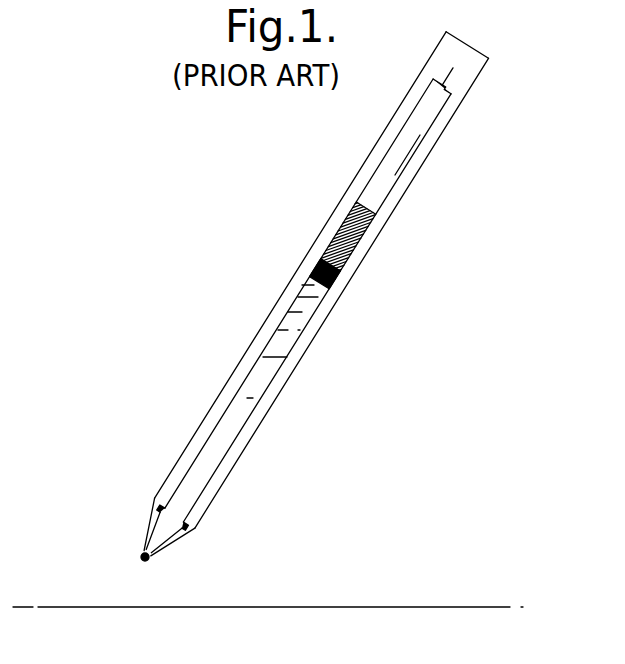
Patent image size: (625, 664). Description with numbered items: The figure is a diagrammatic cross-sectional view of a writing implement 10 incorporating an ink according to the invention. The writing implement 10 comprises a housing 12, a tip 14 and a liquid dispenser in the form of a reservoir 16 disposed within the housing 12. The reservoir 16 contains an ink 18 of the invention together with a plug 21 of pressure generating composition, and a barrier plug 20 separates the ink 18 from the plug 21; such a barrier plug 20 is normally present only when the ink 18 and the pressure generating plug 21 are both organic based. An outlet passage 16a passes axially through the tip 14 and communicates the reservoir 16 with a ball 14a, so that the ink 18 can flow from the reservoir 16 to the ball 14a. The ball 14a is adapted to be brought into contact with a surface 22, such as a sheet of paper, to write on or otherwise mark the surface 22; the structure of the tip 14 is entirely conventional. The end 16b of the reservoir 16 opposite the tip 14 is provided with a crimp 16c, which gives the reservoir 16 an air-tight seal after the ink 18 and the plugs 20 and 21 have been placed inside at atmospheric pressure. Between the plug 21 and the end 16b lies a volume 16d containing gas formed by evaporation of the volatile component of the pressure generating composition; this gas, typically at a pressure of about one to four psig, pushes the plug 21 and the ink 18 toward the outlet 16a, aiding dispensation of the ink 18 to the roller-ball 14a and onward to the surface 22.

The writing implement 10 is at (262, 263).
The housing 12 is at (382, 231).
The tip 14 is at (163, 550).
The ball 14a is at (140, 557).
The reservoir 16 is at (278, 383).
The outlet passage 16a is at (172, 535).
The end of the reservoir 16b is at (458, 91).
The crimp 16c is at (453, 68).
The volume 16d is at (395, 175).
The ink 18 is at (230, 434).
The barrier plug 20 is at (343, 279).
The plug of pressure generating composition 21 is at (347, 218).
The surface 22 is at (372, 607).